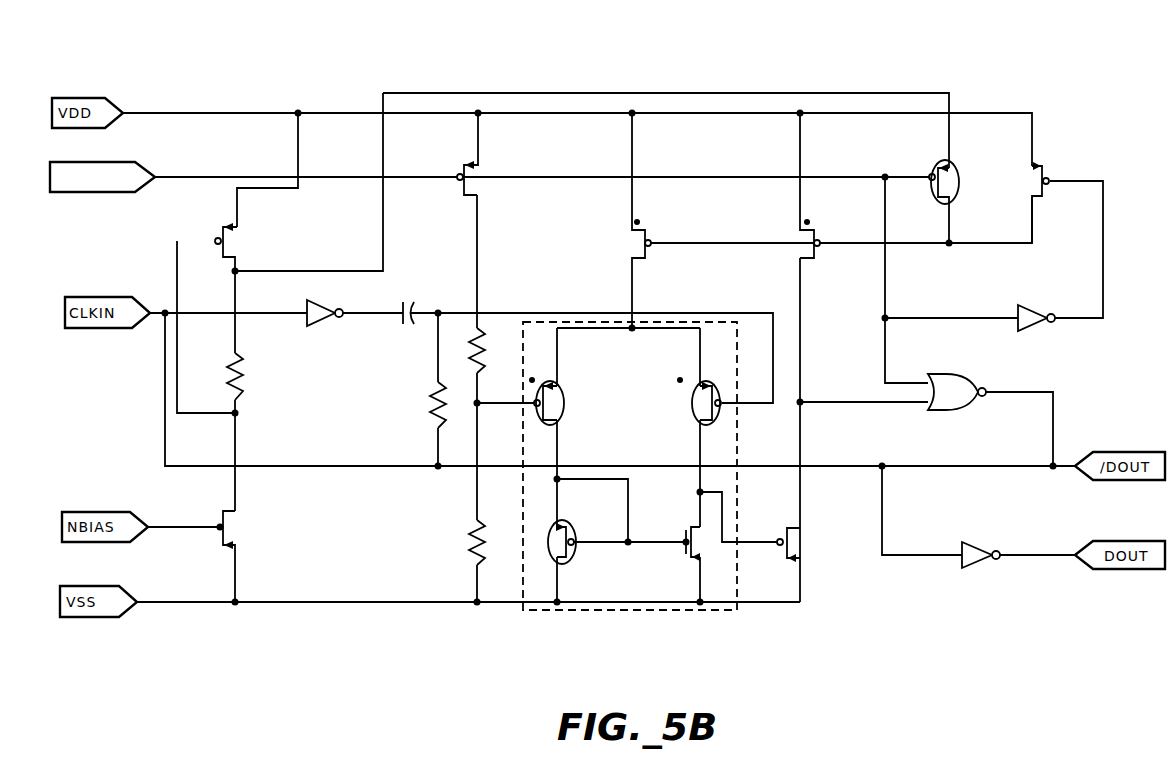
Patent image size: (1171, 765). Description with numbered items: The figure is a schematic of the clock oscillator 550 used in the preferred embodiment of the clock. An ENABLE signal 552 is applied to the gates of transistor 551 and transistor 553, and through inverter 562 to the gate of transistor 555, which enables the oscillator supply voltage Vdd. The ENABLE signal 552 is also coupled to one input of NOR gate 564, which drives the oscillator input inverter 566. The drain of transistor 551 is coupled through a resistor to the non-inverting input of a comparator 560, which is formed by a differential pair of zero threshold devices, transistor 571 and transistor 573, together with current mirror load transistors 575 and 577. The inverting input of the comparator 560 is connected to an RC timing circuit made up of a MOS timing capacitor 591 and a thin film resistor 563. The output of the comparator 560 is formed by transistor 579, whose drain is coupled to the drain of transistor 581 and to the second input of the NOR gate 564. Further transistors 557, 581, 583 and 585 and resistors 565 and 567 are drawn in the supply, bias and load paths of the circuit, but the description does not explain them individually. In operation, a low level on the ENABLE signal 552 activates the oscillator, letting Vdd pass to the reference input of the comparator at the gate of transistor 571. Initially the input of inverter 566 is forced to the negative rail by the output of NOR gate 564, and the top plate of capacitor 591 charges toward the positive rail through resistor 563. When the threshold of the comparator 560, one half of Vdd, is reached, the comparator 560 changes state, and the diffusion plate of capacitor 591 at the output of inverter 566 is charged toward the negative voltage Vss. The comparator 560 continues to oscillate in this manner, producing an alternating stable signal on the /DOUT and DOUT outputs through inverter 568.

The clock oscillator 550 is at (258, 56).
The transistor 551 is at (468, 165).
The ENABLE signal 552 is at (142, 163).
The transistor 553 is at (934, 166).
The transistor 555 is at (1047, 165).
The P-channel transistor 557 is at (648, 229).
The comparator 560 is at (608, 612).
The inverter 562 is at (1026, 330).
The thin film resistor 563 is at (436, 423).
The NOR gate 564 is at (956, 374).
The resistor 565 is at (470, 538).
The oscillator input inverter 566 is at (319, 327).
The resistor 567 is at (246, 396).
The inverter 568 is at (971, 569).
The zero threshold device 571 is at (562, 396).
The zero threshold device 573 is at (699, 420).
The current mirror load transistor 575 is at (562, 566).
The current mirror load transistor 577 is at (690, 561).
The transistor 579 is at (797, 546).
The transistor 581 is at (818, 229).
The P-channel transistor 583 is at (227, 228).
The N-channel transistor 585 is at (223, 518).
The MOS timing capacitor 591 is at (406, 303).